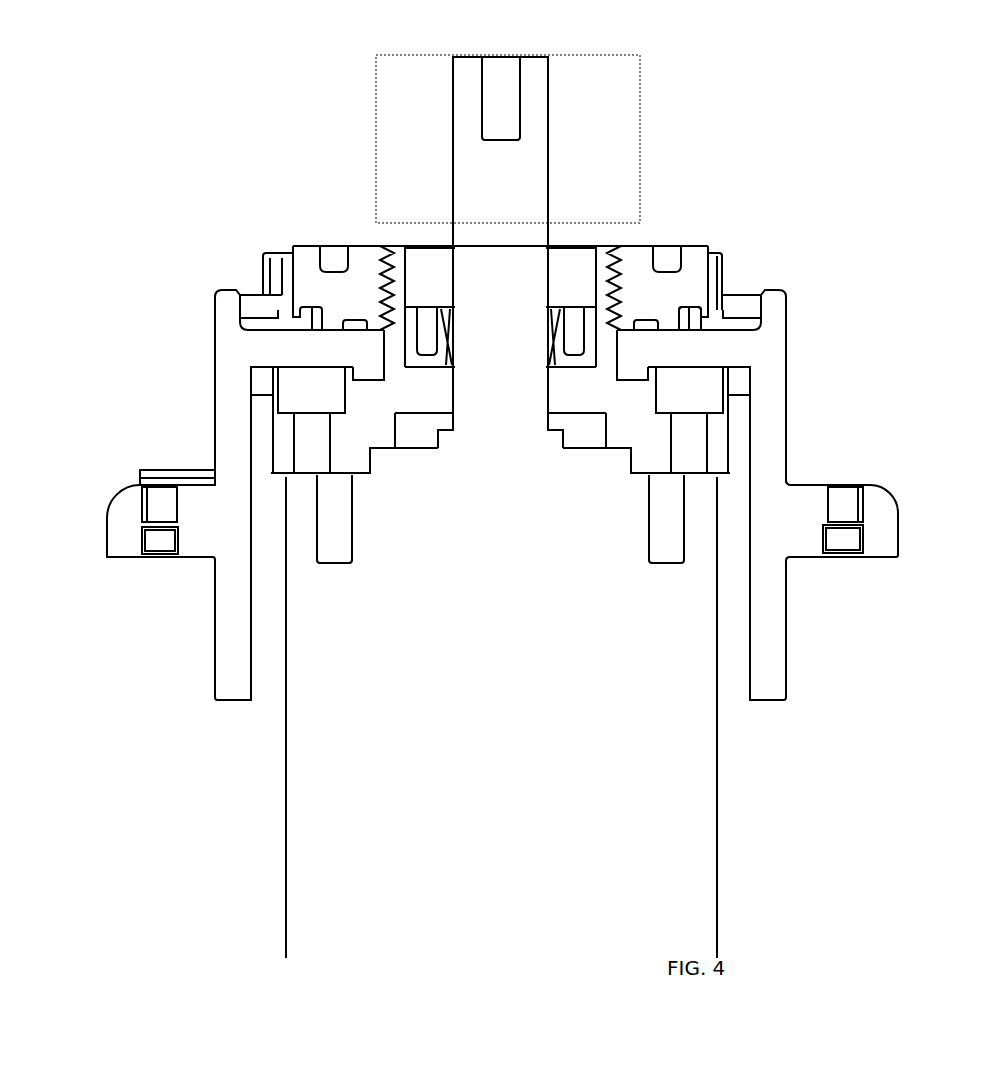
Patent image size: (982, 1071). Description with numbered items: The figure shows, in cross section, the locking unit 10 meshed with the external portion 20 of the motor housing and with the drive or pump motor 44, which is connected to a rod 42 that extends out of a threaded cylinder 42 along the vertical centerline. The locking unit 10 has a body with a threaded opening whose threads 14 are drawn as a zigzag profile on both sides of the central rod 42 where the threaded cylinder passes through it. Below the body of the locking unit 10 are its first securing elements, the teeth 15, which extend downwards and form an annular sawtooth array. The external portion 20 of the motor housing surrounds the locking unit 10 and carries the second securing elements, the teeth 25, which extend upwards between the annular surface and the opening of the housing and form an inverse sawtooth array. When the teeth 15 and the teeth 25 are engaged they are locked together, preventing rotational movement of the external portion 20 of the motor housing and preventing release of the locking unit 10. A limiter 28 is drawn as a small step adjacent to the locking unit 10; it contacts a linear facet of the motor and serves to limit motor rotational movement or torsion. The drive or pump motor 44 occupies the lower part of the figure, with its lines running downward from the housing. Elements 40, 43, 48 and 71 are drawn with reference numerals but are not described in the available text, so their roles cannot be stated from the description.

The locking unit 10 is at (369, 305).
The threads 14 is at (620, 252).
The teeth 15 is at (641, 323).
The external portion of motor housing 20 is at (488, 495).
The teeth 25 is at (357, 333).
The limiter 28 is at (370, 384).
The shaft 40 is at (511, 193).
The rod 42 is at (514, 386).
The insert 43 is at (395, 262).
The drive or pump motor 44 is at (524, 710).
The bolt 48 is at (500, 465).
The flange 71 is at (877, 484).